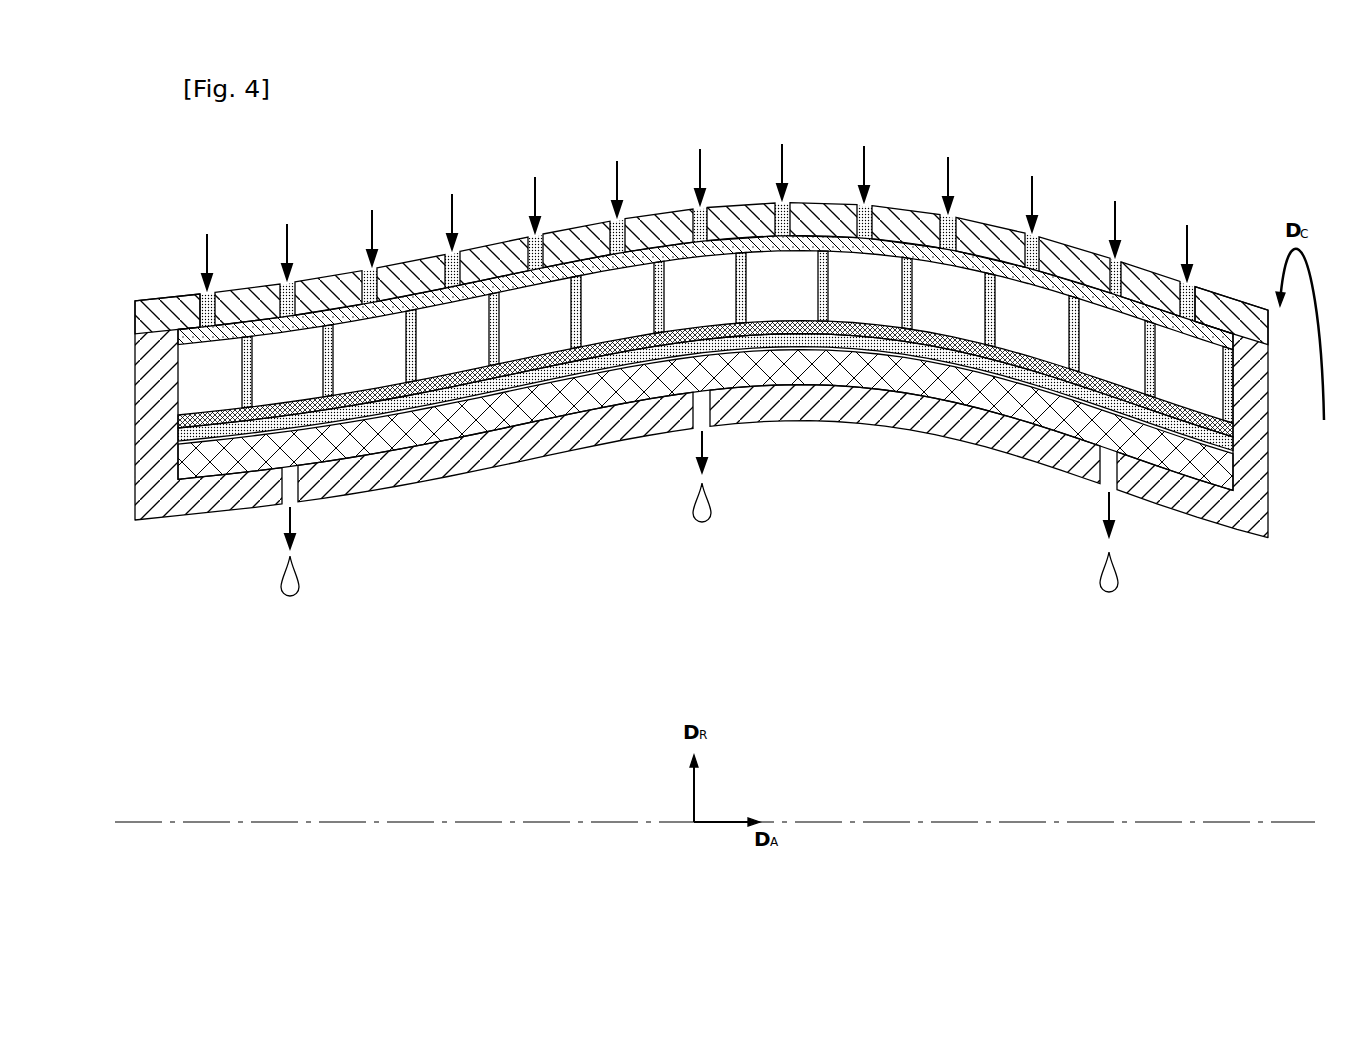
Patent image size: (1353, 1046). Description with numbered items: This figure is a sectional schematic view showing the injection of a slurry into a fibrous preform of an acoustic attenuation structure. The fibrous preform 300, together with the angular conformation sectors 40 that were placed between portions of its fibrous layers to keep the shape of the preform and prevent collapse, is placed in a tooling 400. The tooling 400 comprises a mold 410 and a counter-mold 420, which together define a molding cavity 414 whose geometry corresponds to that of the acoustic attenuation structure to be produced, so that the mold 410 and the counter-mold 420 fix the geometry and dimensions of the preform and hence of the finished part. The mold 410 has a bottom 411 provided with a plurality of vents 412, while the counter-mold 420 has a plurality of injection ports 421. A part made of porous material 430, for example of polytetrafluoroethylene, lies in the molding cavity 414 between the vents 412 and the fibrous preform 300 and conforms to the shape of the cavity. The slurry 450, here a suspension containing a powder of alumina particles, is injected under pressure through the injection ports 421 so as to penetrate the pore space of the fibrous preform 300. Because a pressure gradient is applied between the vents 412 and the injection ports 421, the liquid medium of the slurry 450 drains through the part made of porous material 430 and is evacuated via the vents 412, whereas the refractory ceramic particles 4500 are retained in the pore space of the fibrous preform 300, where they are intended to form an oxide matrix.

The tooling 400 is at (1208, 219).
The mold 410 is at (152, 428).
The bottom 411 is at (194, 495).
The vents 412 is at (299, 498).
The molding cavity 414 is at (176, 328).
The counter-mold 420 is at (1142, 275).
The injection ports 421 is at (286, 281).
The part made of porous material 430 is at (558, 420).
The slurry 450 is at (533, 212).
The refractory ceramic particles 4500 is at (357, 293).
The angular conformation sectors 40 is at (533, 330).
The fibrous preform 300 is at (236, 362).